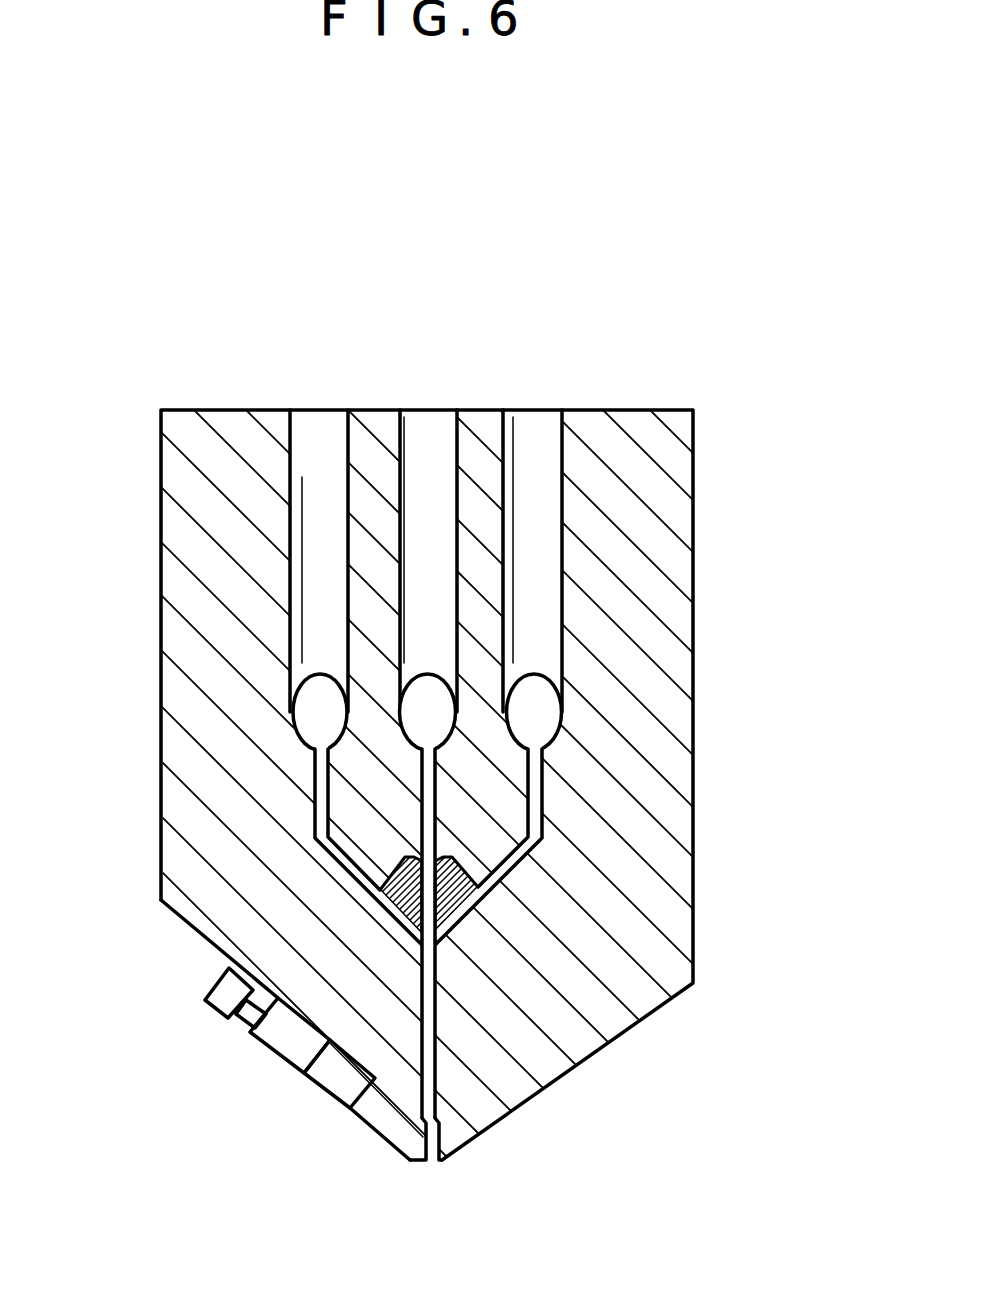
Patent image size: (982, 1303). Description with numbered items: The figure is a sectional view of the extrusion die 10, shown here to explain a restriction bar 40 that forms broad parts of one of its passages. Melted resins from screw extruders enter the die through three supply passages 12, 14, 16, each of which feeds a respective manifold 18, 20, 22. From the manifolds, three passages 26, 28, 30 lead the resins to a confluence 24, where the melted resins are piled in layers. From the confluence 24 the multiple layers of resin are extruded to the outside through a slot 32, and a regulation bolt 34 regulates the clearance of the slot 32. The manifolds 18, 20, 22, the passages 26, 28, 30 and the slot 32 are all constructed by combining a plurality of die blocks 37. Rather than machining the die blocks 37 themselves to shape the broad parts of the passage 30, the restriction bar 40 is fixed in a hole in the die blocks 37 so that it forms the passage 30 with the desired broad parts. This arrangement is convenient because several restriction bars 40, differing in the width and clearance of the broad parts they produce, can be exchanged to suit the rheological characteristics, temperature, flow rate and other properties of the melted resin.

The extrusion die 10 is at (712, 356).
The supply passage 12 is at (318, 437).
The supply passage 14 is at (432, 447).
The supply passage 16 is at (535, 447).
The manifold 18 is at (313, 707).
The manifold 20 is at (425, 697).
The manifold 22 is at (540, 710).
The confluence 24 is at (427, 937).
The passage 26 is at (325, 775).
The passage 28 is at (427, 795).
The passage 30 is at (515, 856).
The slot 32 is at (430, 1079).
The regulation bolt 34 is at (222, 1005).
The die block 37 is at (655, 482).
The restriction bar 40 is at (403, 895).